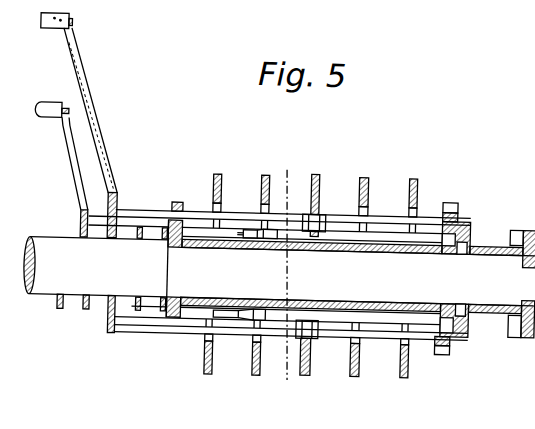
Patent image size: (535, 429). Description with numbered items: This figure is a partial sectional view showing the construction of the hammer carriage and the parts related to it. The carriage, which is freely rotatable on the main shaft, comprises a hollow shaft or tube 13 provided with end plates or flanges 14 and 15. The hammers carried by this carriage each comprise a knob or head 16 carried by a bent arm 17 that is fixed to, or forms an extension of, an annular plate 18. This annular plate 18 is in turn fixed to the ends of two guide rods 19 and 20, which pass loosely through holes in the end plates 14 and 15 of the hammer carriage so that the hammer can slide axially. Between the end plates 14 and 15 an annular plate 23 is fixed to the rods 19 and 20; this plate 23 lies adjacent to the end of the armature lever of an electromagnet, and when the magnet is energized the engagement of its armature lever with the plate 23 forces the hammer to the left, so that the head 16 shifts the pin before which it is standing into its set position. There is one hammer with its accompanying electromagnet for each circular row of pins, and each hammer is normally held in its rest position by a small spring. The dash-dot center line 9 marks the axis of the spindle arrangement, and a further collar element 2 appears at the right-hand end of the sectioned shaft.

The end collar 2 is at (530, 221).
The center line of spindle 9 is at (285, 271).
The hollow shaft or tube 13 is at (234, 304).
The end plate or flange 14 is at (177, 203).
The end plate or flange 15 is at (447, 196).
The knob or head 16 is at (50, 31).
The bent arm 17 is at (98, 135).
The annular plate 18 is at (163, 230).
The guide rod 19 is at (335, 214).
The guide rod 20 is at (382, 332).
The annular plate 23 is at (311, 372).